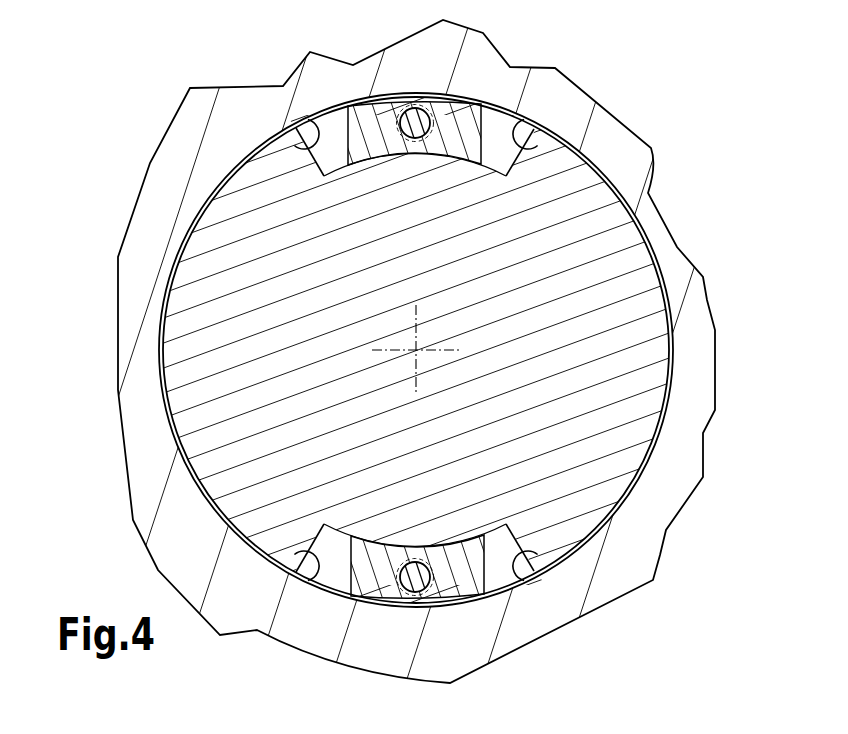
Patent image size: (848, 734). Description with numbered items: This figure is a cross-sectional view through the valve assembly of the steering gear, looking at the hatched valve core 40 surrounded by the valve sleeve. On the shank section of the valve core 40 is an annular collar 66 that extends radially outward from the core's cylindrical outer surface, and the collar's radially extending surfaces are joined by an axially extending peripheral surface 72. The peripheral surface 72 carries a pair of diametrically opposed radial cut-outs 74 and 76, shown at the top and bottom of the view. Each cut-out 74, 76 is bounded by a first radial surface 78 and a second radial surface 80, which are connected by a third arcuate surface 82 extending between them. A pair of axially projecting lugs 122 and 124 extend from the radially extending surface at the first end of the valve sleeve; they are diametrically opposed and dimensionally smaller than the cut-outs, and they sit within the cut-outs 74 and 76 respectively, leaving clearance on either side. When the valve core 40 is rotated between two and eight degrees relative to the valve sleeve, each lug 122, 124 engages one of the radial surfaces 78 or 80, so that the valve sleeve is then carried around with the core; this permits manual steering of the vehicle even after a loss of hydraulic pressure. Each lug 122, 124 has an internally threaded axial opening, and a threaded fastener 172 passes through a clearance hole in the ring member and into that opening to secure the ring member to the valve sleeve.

The valve core 40 is at (642, 280).
The annular collar 66 is at (648, 327).
The peripheral surface 72 is at (670, 352).
The radial cut-out 74 is at (497, 135).
The radial cut-out 76 is at (536, 572).
The first radial surface 78 is at (524, 119).
The second radial surface 80 is at (321, 117).
The third arcuate surface 82 is at (553, 152).
The axially projecting lug 122 is at (460, 118).
The axially projecting lug 124 is at (457, 580).
The threaded fastener 172 is at (415, 110).